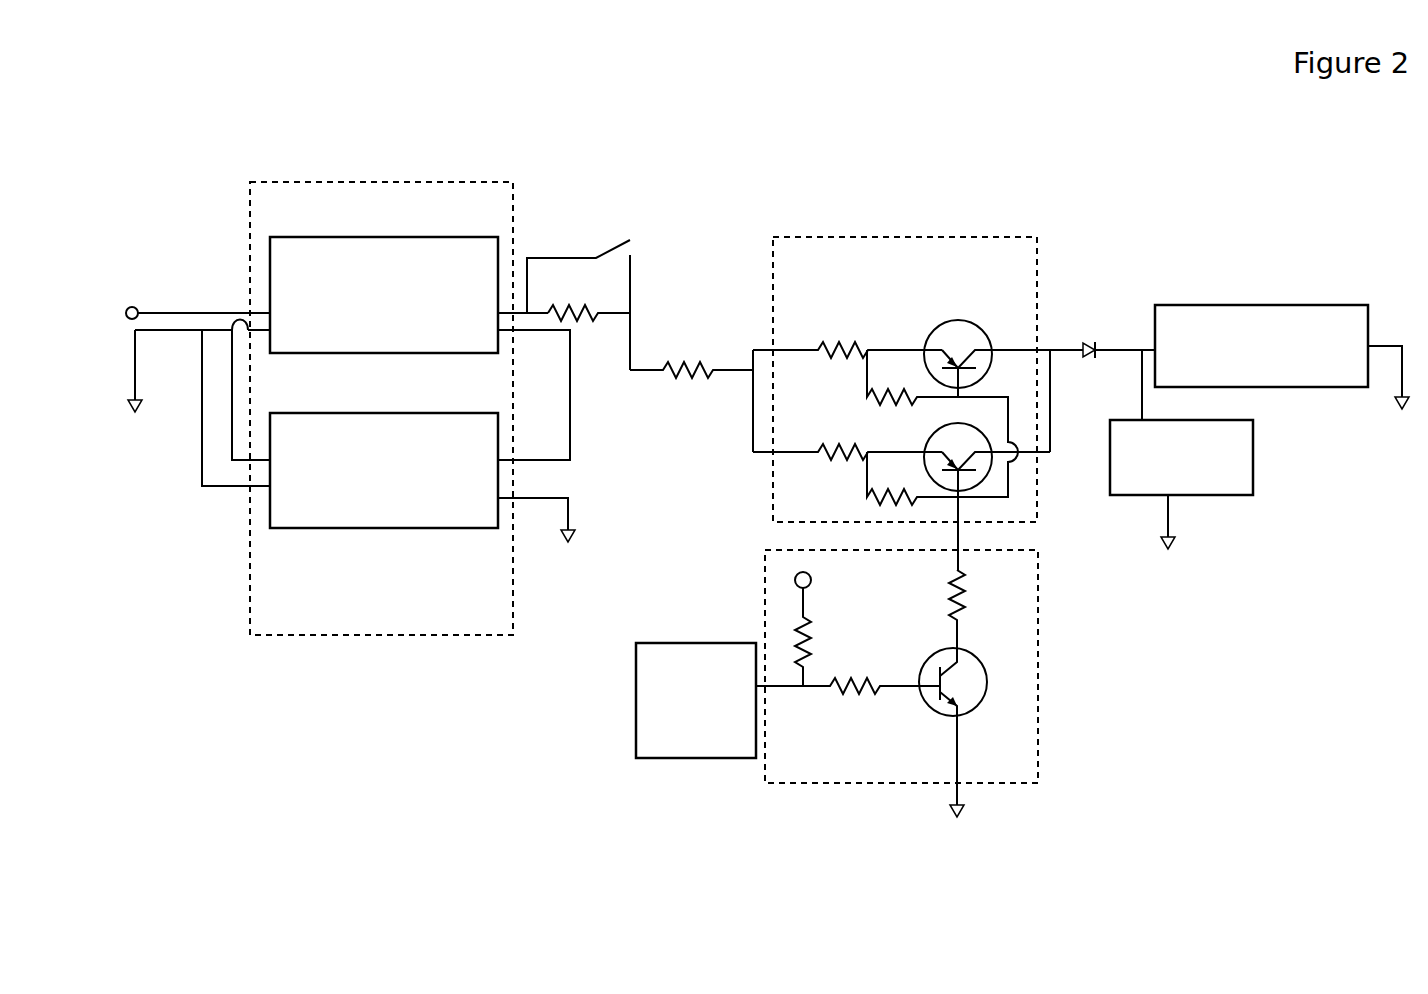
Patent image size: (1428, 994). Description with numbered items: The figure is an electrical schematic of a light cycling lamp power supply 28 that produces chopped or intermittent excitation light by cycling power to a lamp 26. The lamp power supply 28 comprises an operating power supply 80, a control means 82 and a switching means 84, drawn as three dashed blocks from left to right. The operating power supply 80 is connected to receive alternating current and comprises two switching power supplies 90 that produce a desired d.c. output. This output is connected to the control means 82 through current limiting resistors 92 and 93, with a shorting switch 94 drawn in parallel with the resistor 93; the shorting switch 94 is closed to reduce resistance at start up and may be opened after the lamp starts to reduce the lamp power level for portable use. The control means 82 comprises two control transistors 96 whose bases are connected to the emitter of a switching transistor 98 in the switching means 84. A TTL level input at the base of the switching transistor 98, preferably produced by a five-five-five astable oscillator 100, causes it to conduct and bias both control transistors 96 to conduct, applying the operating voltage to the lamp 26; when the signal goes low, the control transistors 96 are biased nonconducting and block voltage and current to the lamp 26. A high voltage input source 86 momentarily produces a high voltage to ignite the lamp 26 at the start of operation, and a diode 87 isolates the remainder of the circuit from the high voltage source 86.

The lamp 26 is at (1282, 303).
The light cycling lamp power supply 28 is at (482, 772).
The operating power supply 80 is at (367, 635).
The control means 82 is at (825, 237).
The switching means 84 is at (765, 783).
The high voltage input source 86 is at (1258, 448).
The diode 87 is at (1097, 347).
The switching power supplies 90 is at (320, 353).
The current limiting resistor 92 is at (690, 368).
The current limiting resistor 93 is at (592, 308).
The shorting switch 94 is at (606, 245).
The control transistors 96 is at (943, 320).
The switching transistor 98 is at (988, 675).
The astable oscillator 100 is at (673, 735).